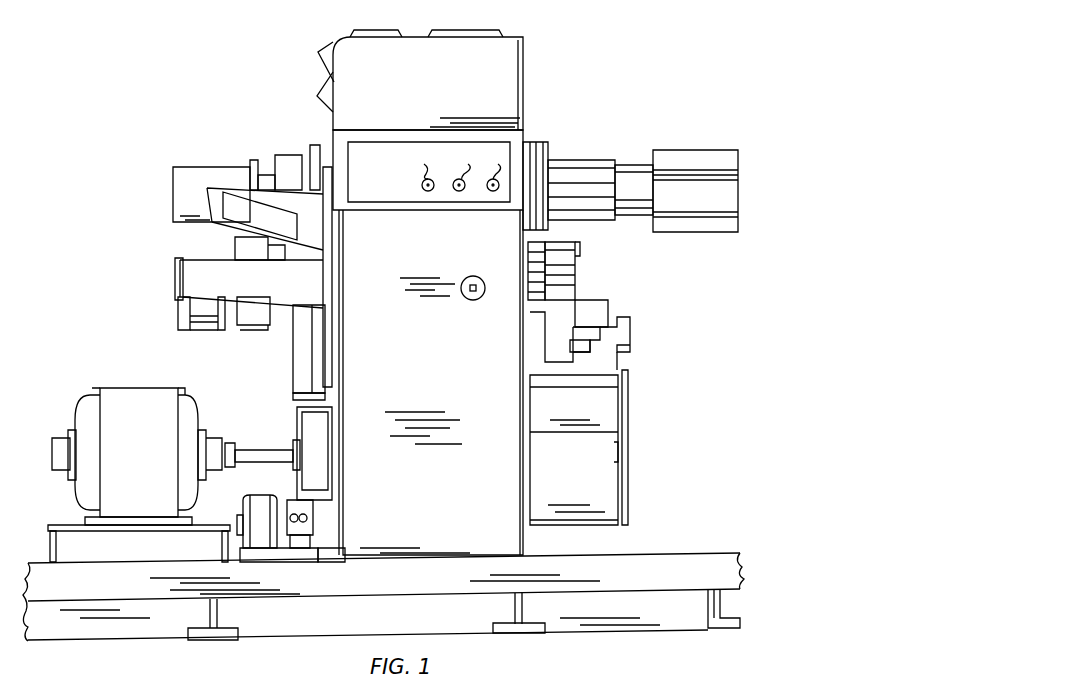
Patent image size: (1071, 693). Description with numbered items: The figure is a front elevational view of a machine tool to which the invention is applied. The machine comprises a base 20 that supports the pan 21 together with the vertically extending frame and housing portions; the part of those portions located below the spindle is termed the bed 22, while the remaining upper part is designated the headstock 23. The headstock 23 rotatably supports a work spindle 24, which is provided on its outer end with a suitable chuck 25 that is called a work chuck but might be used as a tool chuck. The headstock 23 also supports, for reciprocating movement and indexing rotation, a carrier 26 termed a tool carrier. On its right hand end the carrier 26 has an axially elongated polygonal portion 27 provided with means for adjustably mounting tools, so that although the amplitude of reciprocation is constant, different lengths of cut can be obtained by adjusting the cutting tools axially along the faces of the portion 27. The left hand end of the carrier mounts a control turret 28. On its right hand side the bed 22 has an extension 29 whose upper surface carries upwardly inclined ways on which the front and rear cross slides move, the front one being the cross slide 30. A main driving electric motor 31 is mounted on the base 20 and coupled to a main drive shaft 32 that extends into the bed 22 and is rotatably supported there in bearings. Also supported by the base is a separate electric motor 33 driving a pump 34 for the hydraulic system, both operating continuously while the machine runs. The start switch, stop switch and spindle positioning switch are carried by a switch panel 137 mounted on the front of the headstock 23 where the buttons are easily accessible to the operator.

The base 20 is at (624, 612).
The pan 21 is at (630, 573).
The bed 22 is at (450, 486).
The headstock 23 is at (466, 96).
The work spindle 24 is at (526, 294).
The chuck 25 is at (568, 275).
The tool carrier 26 is at (648, 140).
The polygonal portion 27 is at (706, 160).
The control turret 28 is at (188, 170).
The extension 29 is at (602, 462).
The front cross slide 30 is at (598, 308).
The main driving electric motor 31 is at (156, 446).
The main drive shaft 32 is at (245, 445).
The electric motor 33 is at (258, 495).
The pump 34 is at (293, 500).
The switch panel 137 is at (405, 175).